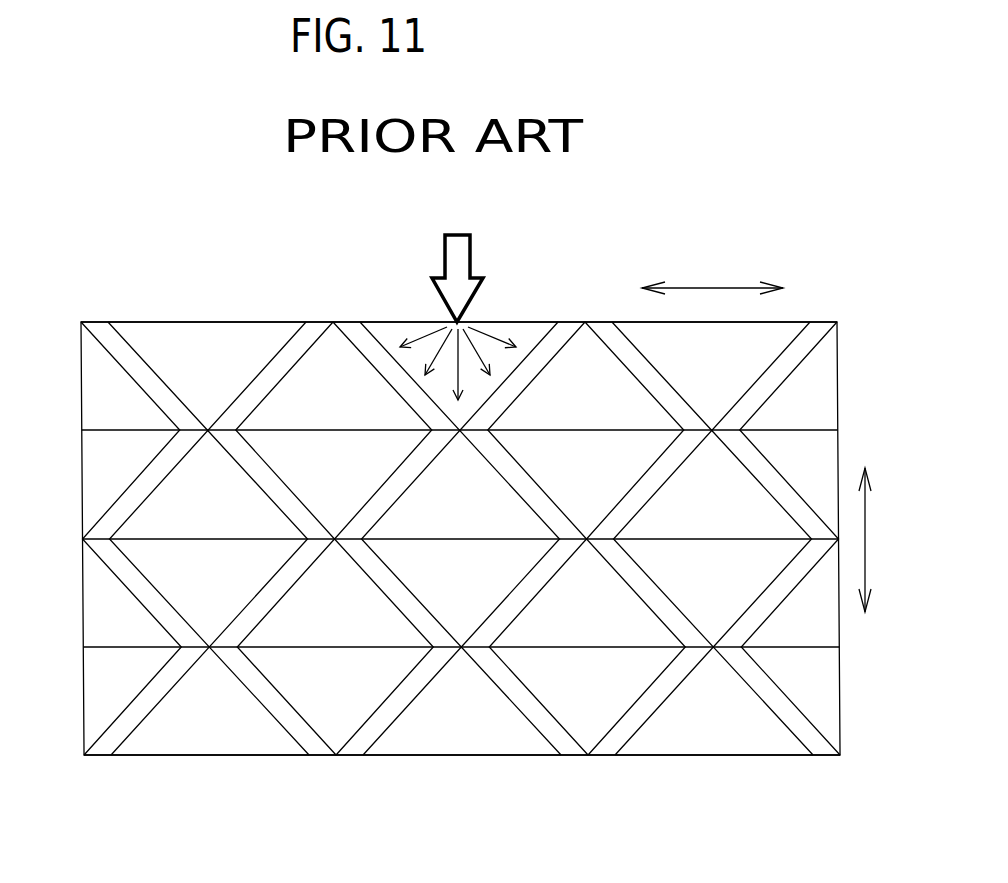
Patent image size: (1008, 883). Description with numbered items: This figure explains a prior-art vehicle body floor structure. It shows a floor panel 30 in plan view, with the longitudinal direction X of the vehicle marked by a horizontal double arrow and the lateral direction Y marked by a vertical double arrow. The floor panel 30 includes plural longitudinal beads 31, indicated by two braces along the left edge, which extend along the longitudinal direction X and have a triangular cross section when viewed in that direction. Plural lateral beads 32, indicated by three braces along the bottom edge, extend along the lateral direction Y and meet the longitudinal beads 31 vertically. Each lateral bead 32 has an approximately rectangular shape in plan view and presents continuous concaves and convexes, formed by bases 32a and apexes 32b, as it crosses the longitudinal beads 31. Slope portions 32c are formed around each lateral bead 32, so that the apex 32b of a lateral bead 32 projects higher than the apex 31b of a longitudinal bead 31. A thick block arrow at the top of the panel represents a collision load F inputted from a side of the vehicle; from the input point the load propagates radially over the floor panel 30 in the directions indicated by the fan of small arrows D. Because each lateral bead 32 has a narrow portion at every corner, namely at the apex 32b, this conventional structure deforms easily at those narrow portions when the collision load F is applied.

The floor panel 30 is at (183, 307).
The longitudinal beads 31 is at (73, 324).
The apex of longitudinal bead 31b is at (587, 431).
The lateral beads 32 is at (338, 772).
The base 32a is at (220, 323).
The apex 32b is at (458, 432).
The slope portion 32c is at (538, 355).
The collision load F is at (457, 261).
The arrow indicating load propagation direction D is at (480, 344).
The longitudinal direction X is at (710, 287).
The lateral direction Y is at (866, 537).